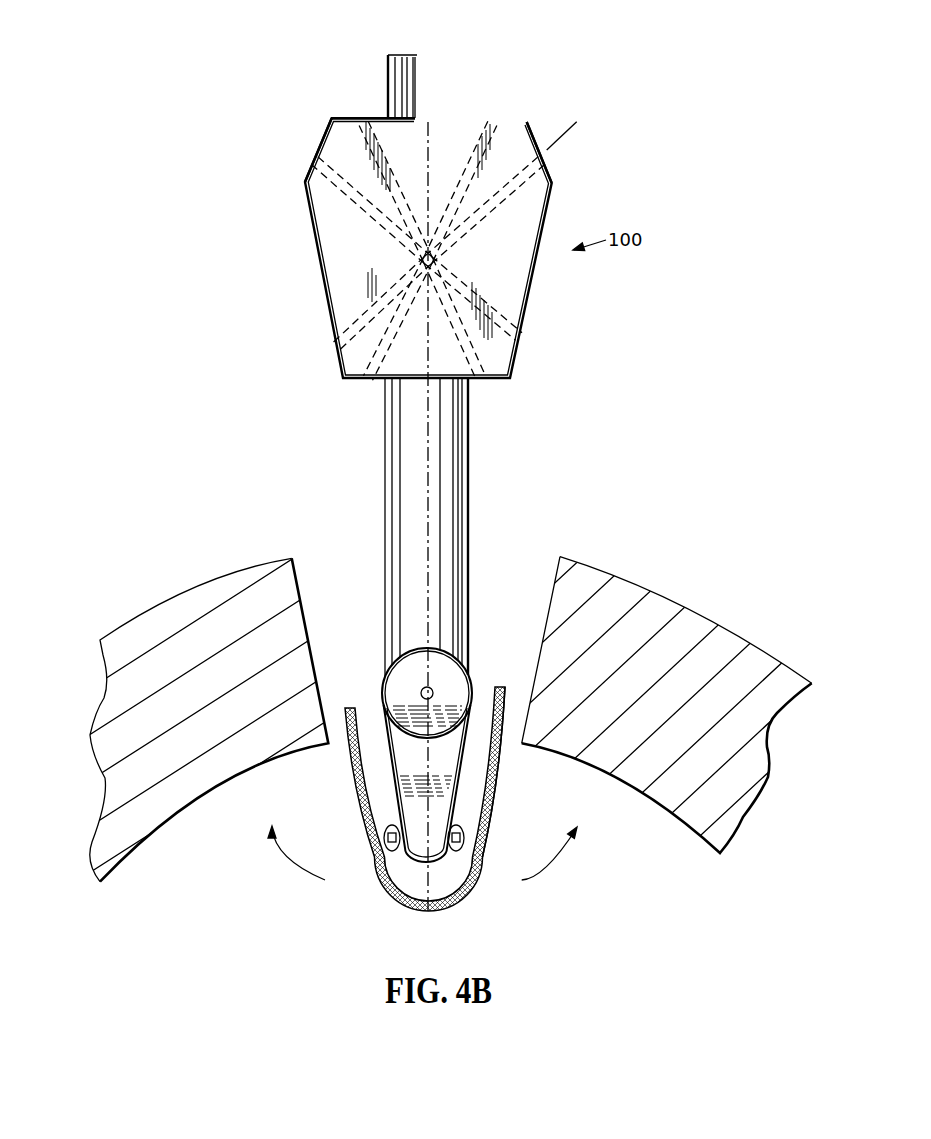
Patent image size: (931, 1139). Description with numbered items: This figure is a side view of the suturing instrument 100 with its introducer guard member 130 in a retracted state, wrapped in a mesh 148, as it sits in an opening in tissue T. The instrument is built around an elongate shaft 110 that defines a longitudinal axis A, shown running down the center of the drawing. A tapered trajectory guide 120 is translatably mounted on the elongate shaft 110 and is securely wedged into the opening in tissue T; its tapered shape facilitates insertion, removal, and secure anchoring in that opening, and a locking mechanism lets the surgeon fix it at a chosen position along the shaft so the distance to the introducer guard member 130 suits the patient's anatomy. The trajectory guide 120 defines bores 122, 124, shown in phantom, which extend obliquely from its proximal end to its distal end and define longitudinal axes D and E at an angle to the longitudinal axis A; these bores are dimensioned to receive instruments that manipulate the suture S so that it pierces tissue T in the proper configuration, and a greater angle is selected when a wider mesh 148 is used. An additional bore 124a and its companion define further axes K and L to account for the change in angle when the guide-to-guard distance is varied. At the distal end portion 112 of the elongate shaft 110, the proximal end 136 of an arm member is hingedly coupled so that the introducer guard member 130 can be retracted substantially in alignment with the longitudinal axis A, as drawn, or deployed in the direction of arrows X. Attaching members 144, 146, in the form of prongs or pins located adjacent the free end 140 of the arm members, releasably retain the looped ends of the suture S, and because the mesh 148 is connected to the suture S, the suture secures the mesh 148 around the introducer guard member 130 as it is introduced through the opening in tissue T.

The suturing instrument 100 is at (426, 494).
The elongate shaft 110 is at (459, 366).
The distal end portion 112 is at (457, 642).
The trajectory guide 120 is at (426, 230).
The bore 122 is at (522, 180).
The bore 124 is at (330, 173).
The additional bore 124a is at (345, 122).
The introducer guard member 130 is at (392, 773).
The proximal end 136 is at (457, 685).
The free end 140 is at (443, 799).
The attaching member 144 is at (383, 843).
The attaching member 146 is at (457, 838).
The mesh 148 is at (498, 757).
The longitudinal axis A is at (428, 530).
The longitudinal axis of bore D is at (337, 346).
The longitudinal axis of bore E is at (312, 152).
The longitudinal axis of additional bore K is at (368, 378).
The longitudinal axis of additional bore L is at (362, 120).
The suture S is at (468, 890).
The tissue T is at (633, 588).
The arrows X is at (424, 859).